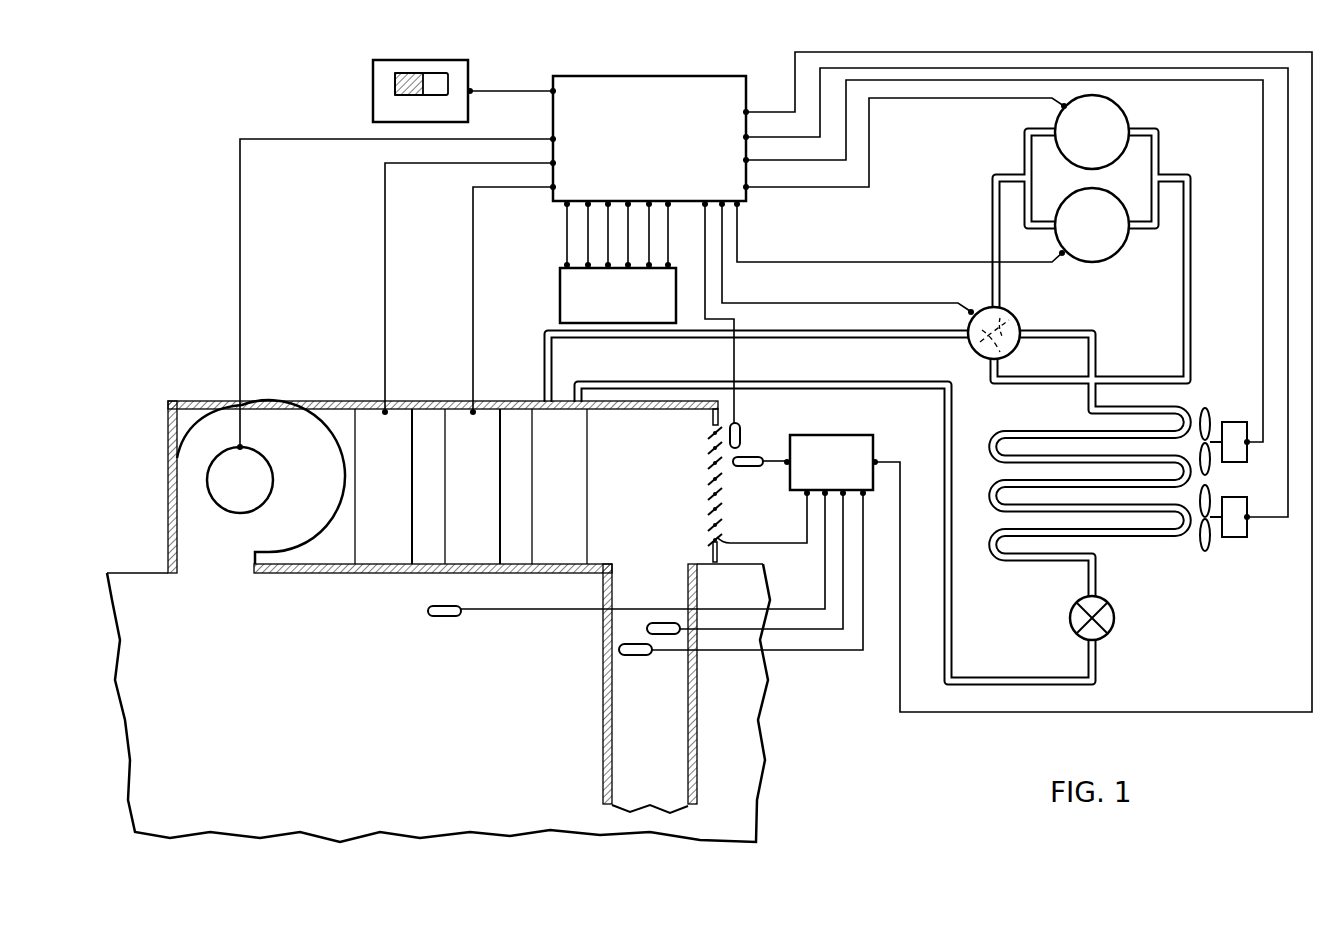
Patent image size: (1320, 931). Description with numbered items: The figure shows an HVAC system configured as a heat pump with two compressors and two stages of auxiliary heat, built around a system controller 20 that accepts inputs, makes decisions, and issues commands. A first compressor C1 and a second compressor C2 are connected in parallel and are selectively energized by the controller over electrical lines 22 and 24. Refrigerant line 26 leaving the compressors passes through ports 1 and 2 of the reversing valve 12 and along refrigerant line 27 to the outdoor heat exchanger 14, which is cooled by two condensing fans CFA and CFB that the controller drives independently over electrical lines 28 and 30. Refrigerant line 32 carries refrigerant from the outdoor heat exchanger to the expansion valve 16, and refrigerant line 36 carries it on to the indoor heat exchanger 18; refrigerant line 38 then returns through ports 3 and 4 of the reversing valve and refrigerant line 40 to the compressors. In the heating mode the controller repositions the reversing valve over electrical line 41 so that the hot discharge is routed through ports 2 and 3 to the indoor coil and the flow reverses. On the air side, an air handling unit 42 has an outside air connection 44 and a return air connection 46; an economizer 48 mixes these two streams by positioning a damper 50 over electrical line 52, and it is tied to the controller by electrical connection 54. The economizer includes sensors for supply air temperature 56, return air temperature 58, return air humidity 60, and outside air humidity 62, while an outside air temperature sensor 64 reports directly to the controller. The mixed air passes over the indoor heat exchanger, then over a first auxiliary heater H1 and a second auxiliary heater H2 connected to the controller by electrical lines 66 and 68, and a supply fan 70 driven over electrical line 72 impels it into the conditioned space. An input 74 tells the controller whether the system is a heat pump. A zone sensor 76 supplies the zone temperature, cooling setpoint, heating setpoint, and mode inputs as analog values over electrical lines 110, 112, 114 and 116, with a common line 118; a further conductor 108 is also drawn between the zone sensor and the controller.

The port 1 is at (1027, 321).
The port 2 is at (1005, 367).
The port 3 is at (961, 346).
The port 4 is at (984, 294).
The reversing valve 12 is at (974, 359).
The outdoor heat exchanger 14 is at (1137, 518).
The expansion valve 16 is at (1114, 624).
The indoor heat exchanger 18 is at (572, 505).
The system controller 20 is at (662, 147).
The electrical line 22 is at (967, 100).
The electrical line 24 is at (842, 262).
The refrigerant line 26 is at (1192, 222).
The refrigerant line 27 is at (1093, 332).
The electrical line 28 is at (1263, 270).
The electrical line 30 is at (1288, 500).
The refrigerant line 32 is at (1087, 586).
The refrigerant line 36 is at (1047, 676).
The refrigerant line 38 is at (675, 342).
The refrigerant line 40 is at (990, 212).
The electrical line 41 is at (927, 303).
The air handling unit 42 is at (435, 465).
The outside air connection 44 is at (766, 492).
The return air connection 46 is at (661, 719).
The economizer 48 is at (845, 475).
The damper 50 is at (749, 456).
The electrical line 52 is at (770, 543).
The electrical connection 54 is at (900, 664).
The supply air temperature sensor 56 is at (450, 618).
The return air temperature sensor 58 is at (647, 629).
The return air humidity sensor 60 is at (619, 650).
The outside air humidity sensor 62 is at (776, 456).
The outside air temperature sensor 64 is at (713, 423).
The electrical line 66 is at (473, 321).
The electrical line 68 is at (385, 293).
The supply fan 70 is at (253, 493).
The electrical line 72 is at (240, 275).
The input 74 is at (373, 80).
The zone sensor 76 is at (631, 308).
The display line 108 is at (567, 218).
The electrical line 110 is at (588, 233).
The electrical line 112 is at (608, 246).
The electrical line 114 is at (628, 212).
The electrical line 116 is at (650, 244).
The common line 118 is at (668, 221).
The first compressor C1 is at (1105, 145).
The second compressor C2 is at (1105, 238).
The condensing fan CFA is at (1233, 420).
The condensing fan CFB is at (1237, 538).
The first auxiliary heater H1 is at (484, 505).
The second auxiliary heater H2 is at (399, 505).